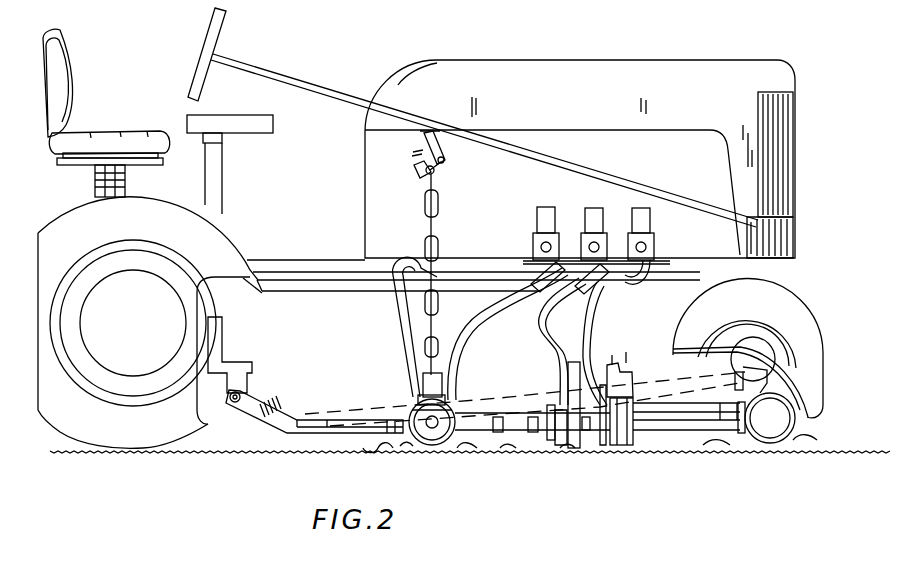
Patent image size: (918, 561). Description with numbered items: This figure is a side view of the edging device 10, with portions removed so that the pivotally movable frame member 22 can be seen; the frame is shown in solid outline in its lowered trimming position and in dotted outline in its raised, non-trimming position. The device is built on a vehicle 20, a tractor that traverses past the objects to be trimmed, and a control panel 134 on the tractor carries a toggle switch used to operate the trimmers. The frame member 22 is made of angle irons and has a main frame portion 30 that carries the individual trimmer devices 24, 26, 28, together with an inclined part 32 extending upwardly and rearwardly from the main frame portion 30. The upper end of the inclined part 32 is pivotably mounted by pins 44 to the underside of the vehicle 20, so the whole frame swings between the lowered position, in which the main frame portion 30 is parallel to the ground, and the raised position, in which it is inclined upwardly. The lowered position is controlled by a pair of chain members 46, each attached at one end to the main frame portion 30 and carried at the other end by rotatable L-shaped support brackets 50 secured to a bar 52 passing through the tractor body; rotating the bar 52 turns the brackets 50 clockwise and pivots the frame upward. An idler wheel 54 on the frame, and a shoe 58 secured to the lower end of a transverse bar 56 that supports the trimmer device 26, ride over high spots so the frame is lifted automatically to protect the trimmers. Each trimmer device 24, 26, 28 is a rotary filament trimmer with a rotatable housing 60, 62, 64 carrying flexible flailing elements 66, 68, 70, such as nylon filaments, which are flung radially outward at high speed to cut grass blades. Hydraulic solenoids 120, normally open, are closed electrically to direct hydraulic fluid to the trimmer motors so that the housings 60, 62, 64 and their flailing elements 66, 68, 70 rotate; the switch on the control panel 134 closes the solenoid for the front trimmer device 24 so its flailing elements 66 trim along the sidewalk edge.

The edging device 10 is at (688, 50).
The vehicle 20 is at (540, 75).
The control panel 134 is at (218, 118).
The chain members 46 is at (422, 200).
The L-shaped support brackets 50 is at (443, 143).
The bar 52 is at (447, 162).
The hydraulic solenoids 120 is at (533, 228).
The transverse bar 56 is at (584, 358).
The trimmer device 28 is at (460, 390).
The rotatable housing 64 is at (430, 440).
The main frame portion 30 is at (508, 412).
The frame member 22 is at (310, 413).
The inclined part 32 is at (256, 398).
The pins 44 is at (233, 404).
The flexible flailing elements 70 is at (372, 450).
The shoe 58 is at (578, 450).
The flexible flailing elements 68 is at (627, 375).
The trimmer device 26 is at (618, 362).
The rotatable housing 62 is at (634, 393).
The idler wheel 54 is at (689, 422).
The trimmer device 24 is at (770, 337).
The flexible flailing elements 66 is at (745, 370).
The rotatable housing 60 is at (765, 442).